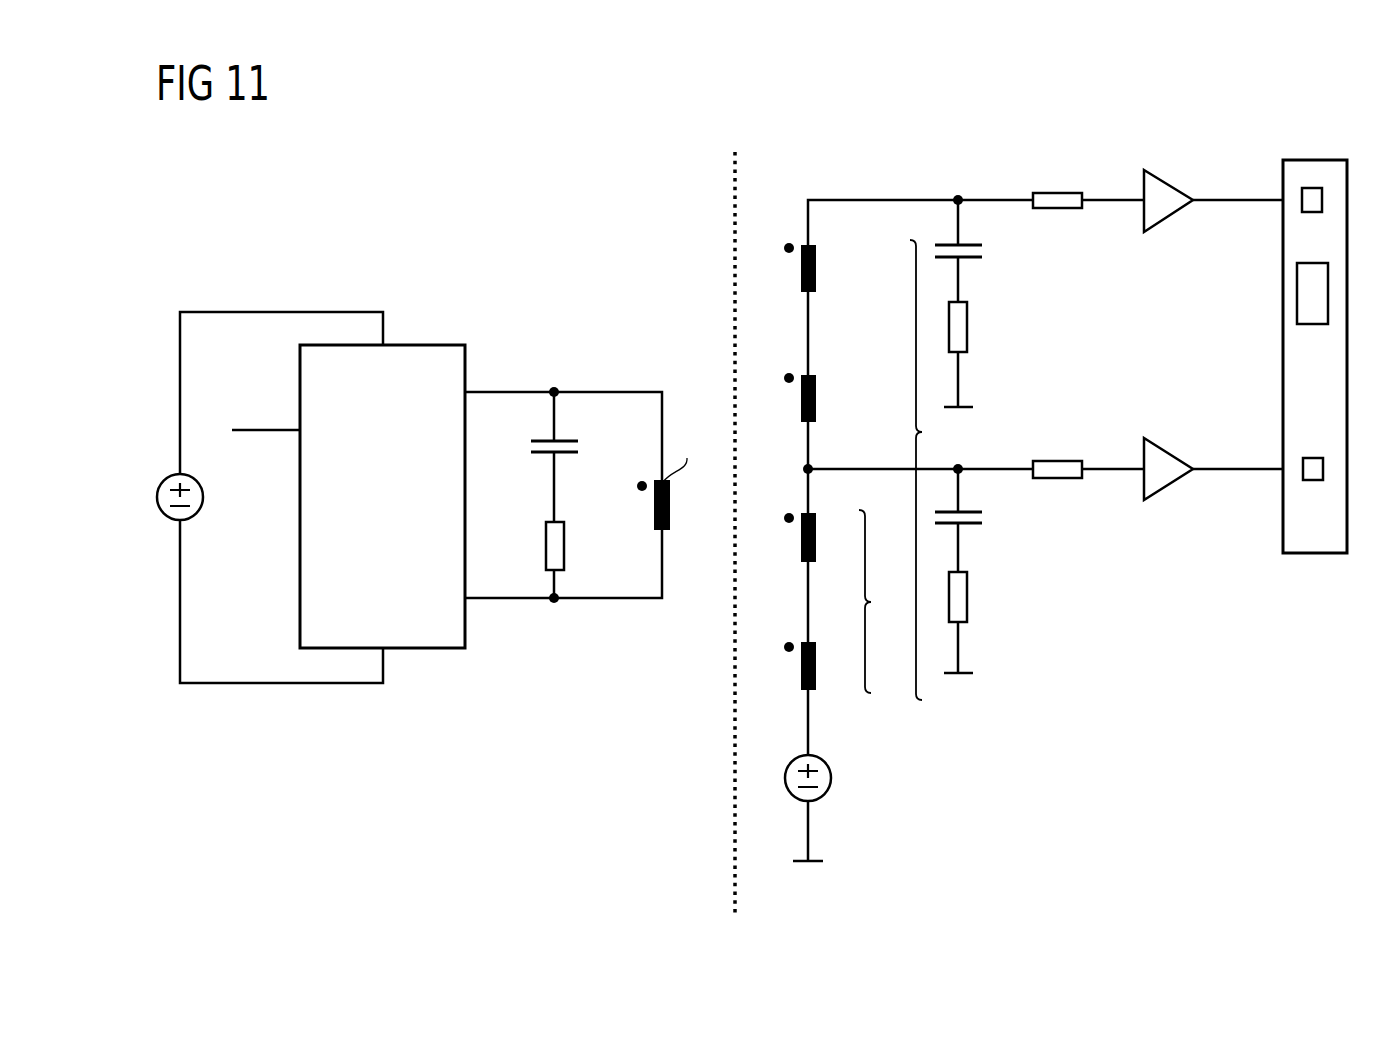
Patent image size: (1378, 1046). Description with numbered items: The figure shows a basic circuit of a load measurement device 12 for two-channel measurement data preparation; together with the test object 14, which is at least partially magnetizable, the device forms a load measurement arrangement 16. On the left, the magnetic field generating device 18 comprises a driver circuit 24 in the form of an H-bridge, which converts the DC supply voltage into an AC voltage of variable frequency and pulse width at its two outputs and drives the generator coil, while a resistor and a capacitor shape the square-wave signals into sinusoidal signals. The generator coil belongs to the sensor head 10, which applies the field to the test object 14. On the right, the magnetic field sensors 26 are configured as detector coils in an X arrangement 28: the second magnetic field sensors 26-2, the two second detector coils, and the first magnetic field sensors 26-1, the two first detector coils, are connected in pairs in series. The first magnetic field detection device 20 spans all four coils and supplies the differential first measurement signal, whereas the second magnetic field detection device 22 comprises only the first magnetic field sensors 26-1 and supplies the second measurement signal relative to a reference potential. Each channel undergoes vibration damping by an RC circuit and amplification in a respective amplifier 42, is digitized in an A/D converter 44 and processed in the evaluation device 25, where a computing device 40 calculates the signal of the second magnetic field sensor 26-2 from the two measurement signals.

The sensor head 10 is at (813, 144).
The load measurement device 12 is at (485, 787).
The test object 14 is at (735, 869).
The load measurement arrangement 16 is at (1051, 869).
The magnetic field generating device 18 is at (585, 214).
The first magnetic field detection device 20 is at (880, 470).
The second magnetic field detection device 22 is at (882, 601).
The driver circuit 24 is at (415, 688).
The evaluation device 25 is at (1283, 357).
The magnetic field sensor 26 is at (861, 213).
The first magnetic field sensor 26-1 is at (914, 718).
The second magnetic field sensor 26-2 is at (890, 226).
The X arrangement 28 is at (905, 856).
The computing device 40 is at (1313, 324).
The amplifier 42 is at (1175, 180).
The A/D converter 44 is at (1313, 188).